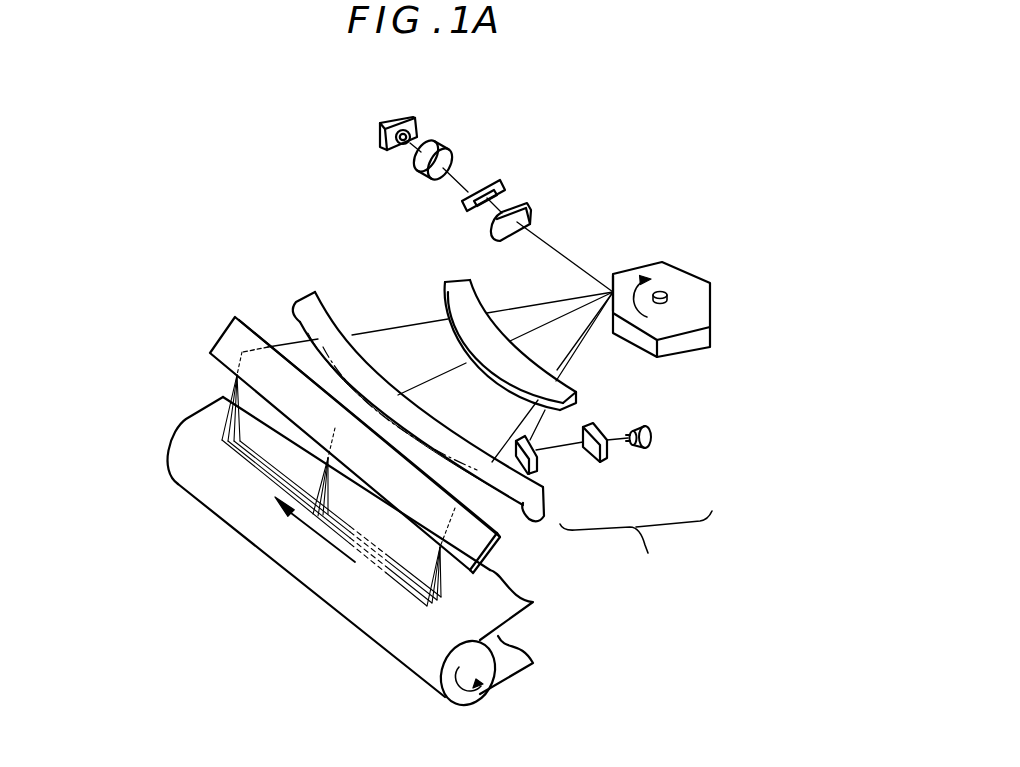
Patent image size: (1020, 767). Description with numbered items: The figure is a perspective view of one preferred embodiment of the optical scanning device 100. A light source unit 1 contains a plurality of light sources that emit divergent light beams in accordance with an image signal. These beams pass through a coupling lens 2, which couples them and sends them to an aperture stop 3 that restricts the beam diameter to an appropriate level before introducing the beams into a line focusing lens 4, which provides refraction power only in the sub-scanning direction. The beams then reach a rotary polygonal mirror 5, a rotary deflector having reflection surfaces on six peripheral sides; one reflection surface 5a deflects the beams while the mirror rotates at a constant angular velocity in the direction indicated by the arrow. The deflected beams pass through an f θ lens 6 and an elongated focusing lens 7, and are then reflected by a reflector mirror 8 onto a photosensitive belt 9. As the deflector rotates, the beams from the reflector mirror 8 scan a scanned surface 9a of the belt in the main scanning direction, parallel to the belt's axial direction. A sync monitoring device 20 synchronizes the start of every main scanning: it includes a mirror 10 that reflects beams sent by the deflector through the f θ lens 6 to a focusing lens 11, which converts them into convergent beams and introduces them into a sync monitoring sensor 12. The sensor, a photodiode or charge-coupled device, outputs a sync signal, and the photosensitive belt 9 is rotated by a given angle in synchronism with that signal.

The optical scanning device 100 is at (155, 195).
The light source unit 1 is at (415, 118).
The coupling lens 2 is at (447, 148).
The aperture stop 3 is at (500, 178).
The line focusing lens 4 is at (532, 210).
The rotary polygonal mirror 5 is at (688, 288).
The reflection surface 5a is at (613, 292).
The f θ lens 6 is at (460, 290).
The elongated focusing lens 7 is at (312, 295).
The reflector mirror 8 is at (227, 348).
The photosensitive belt 9 is at (526, 689).
The scanned surface 9a is at (507, 603).
The mirror 10 is at (538, 467).
The focusing lens 11 is at (607, 455).
The sync monitoring sensor 12 is at (654, 452).
The sync monitoring device 20 is at (636, 544).